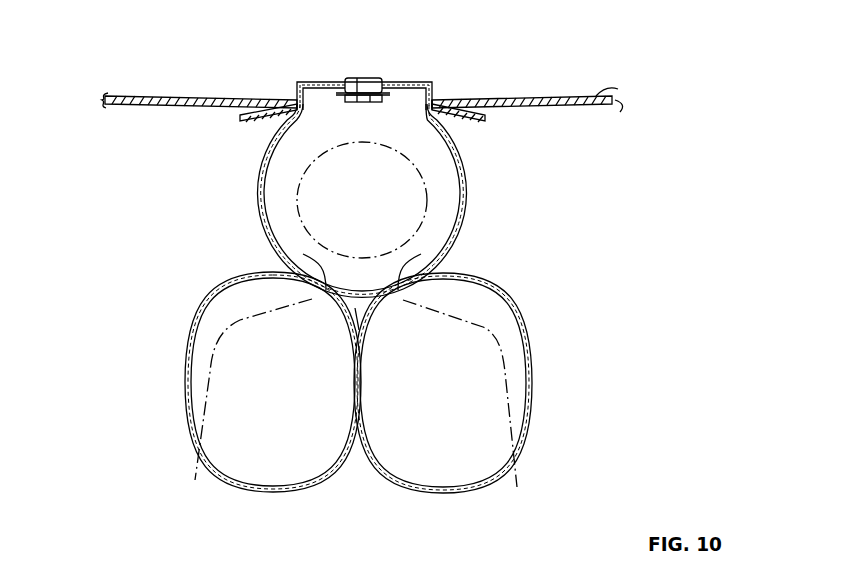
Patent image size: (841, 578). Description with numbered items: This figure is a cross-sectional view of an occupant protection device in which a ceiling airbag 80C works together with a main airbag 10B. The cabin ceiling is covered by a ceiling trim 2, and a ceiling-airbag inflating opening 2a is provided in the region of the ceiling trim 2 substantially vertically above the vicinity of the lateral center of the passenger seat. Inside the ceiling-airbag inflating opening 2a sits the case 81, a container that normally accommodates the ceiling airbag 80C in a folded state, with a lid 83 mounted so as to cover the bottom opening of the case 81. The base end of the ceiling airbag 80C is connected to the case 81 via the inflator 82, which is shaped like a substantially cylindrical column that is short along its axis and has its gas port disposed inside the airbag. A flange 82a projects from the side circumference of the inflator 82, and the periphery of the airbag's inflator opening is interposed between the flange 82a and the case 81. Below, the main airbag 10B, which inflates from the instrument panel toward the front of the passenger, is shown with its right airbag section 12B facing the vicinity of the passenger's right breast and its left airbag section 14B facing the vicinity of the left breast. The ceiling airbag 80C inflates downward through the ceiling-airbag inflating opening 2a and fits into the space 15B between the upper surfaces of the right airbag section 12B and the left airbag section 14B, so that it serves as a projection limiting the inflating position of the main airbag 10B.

The ceiling trim 2 is at (614, 94).
The ceiling-airbag inflating opening 2a is at (425, 93).
The case 81 is at (296, 96).
The inflator 82 is at (420, 65).
The flange 82a is at (355, 78).
The lid 83 is at (240, 118).
The ceiling airbag 80C is at (467, 190).
The main airbag 10B is at (383, 382).
The left airbag section 14B is at (200, 303).
The right airbag section 12B is at (529, 338).
The space 15B is at (358, 328).